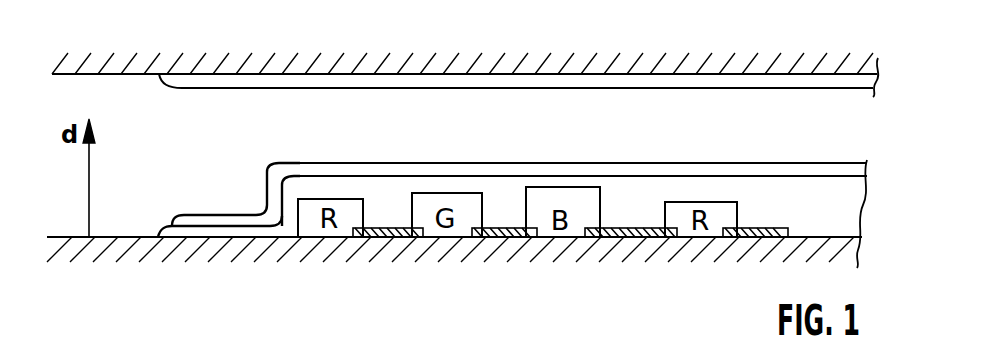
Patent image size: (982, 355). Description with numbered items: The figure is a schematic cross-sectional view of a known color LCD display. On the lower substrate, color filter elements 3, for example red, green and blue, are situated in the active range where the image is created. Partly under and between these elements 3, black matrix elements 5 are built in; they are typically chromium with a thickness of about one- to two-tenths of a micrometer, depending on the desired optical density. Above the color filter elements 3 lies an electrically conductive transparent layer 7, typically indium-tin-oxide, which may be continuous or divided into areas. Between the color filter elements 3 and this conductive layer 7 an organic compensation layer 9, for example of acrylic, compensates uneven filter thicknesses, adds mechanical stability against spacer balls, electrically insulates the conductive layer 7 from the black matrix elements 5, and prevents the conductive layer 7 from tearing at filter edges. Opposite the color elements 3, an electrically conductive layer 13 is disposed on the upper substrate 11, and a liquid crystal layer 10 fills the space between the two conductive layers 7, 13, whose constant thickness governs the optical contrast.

The substrate 11 is at (163, 31).
The electrically conductive layer 13 is at (363, 86).
The liquid crystal layer 10 is at (489, 143).
The electrically conductive transparent layer 7 is at (212, 222).
The color filter elements 3 is at (714, 196).
The organic compensation layer 9 is at (288, 224).
The black matrix elements 5 is at (503, 230).